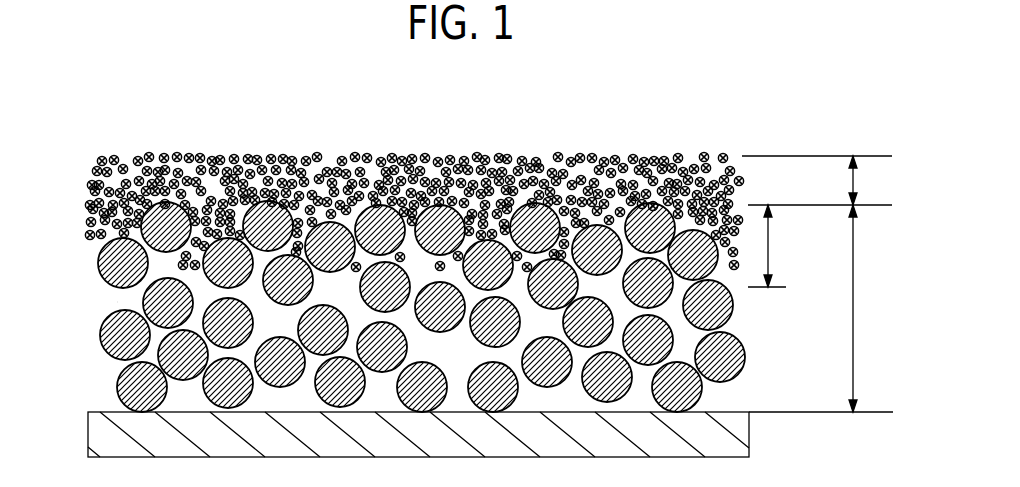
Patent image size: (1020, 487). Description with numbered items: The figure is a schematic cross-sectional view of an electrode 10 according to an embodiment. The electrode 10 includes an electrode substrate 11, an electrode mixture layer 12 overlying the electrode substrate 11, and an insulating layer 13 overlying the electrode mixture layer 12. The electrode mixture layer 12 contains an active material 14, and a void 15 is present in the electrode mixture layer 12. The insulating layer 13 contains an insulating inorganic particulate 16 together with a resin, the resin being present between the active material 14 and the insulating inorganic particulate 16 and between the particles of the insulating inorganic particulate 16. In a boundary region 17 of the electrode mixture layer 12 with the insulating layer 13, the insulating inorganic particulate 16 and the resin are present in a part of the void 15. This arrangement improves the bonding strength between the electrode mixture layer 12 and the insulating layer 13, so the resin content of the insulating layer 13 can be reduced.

The electrode 10 is at (784, 130).
The electrode substrate 11 is at (87, 428).
The electrode mixture layer 12 is at (821, 308).
The insulating layer 13 is at (817, 180).
The active material 14 is at (113, 336).
The void 15 is at (117, 302).
The insulating inorganic particulate 16 is at (258, 157).
The boundary region 17 is at (773, 246).